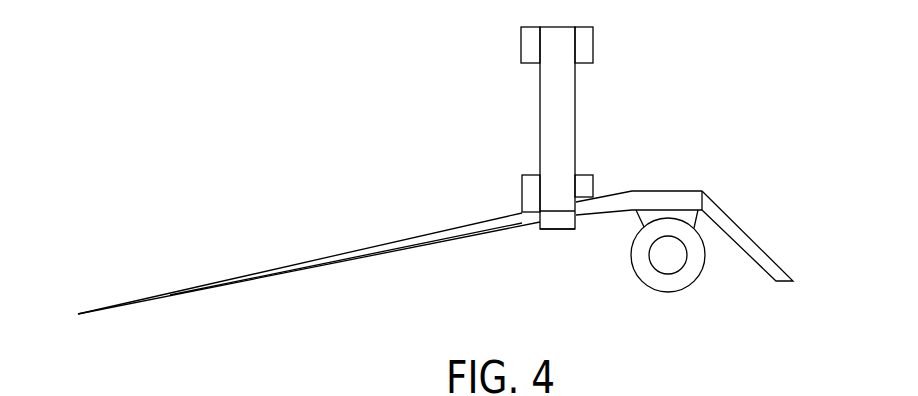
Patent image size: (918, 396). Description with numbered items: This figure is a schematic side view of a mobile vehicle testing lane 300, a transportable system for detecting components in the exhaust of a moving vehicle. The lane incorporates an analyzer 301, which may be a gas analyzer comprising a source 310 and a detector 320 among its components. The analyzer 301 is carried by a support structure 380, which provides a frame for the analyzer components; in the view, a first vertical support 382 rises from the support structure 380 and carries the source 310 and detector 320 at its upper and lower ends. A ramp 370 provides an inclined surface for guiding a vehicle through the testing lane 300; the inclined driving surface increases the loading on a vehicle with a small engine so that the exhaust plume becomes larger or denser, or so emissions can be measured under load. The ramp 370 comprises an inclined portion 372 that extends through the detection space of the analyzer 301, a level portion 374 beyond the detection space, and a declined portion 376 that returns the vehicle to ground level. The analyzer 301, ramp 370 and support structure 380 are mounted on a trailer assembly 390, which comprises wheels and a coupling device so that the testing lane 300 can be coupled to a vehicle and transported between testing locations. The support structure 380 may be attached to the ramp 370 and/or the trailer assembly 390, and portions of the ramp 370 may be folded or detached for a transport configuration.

The mobile vehicle testing lane 300 is at (334, 84).
The analyzer 301 is at (521, 50).
The detector 320 is at (593, 46).
The first vertical support 382 is at (563, 118).
The source 310 is at (530, 192).
The support structure 380 is at (558, 230).
The ramp 370 is at (408, 253).
The inclined portion 372 is at (358, 250).
The level portion 374 is at (632, 200).
The descending ramp section 376 is at (752, 245).
The trailer assembly 390 is at (632, 262).